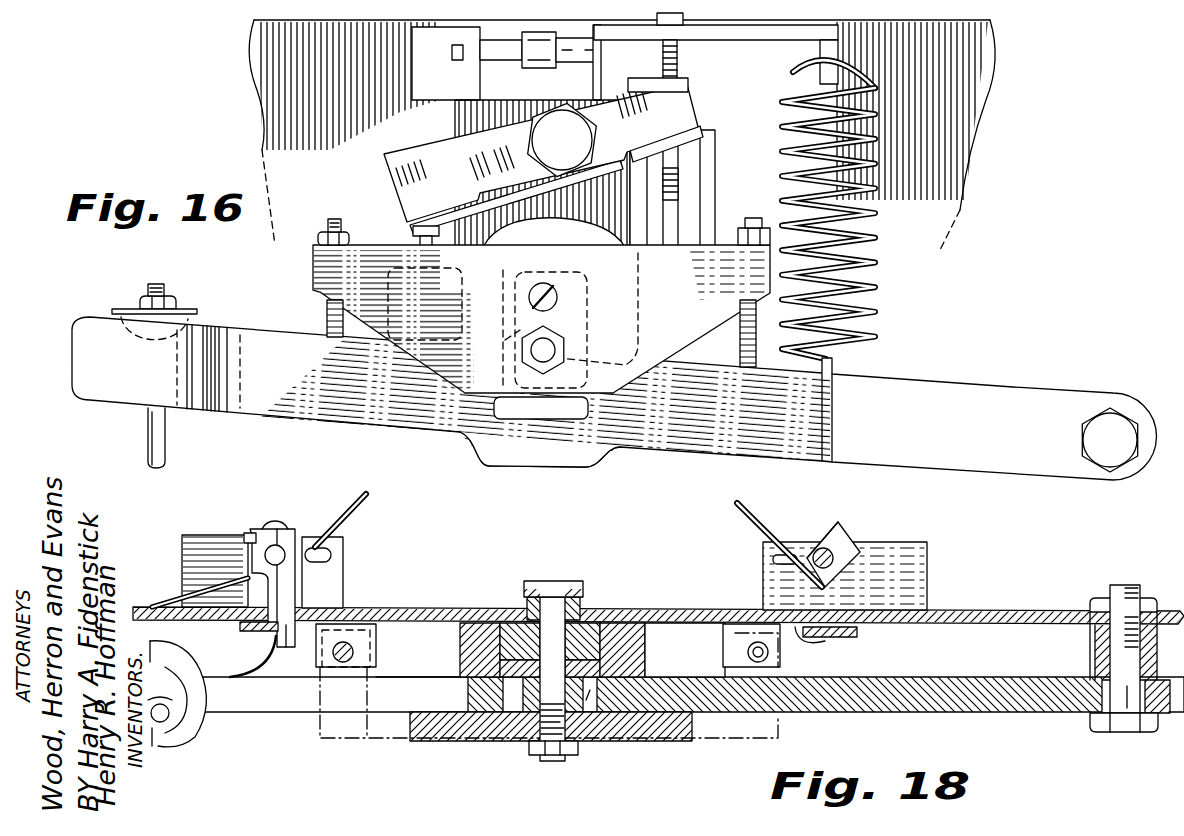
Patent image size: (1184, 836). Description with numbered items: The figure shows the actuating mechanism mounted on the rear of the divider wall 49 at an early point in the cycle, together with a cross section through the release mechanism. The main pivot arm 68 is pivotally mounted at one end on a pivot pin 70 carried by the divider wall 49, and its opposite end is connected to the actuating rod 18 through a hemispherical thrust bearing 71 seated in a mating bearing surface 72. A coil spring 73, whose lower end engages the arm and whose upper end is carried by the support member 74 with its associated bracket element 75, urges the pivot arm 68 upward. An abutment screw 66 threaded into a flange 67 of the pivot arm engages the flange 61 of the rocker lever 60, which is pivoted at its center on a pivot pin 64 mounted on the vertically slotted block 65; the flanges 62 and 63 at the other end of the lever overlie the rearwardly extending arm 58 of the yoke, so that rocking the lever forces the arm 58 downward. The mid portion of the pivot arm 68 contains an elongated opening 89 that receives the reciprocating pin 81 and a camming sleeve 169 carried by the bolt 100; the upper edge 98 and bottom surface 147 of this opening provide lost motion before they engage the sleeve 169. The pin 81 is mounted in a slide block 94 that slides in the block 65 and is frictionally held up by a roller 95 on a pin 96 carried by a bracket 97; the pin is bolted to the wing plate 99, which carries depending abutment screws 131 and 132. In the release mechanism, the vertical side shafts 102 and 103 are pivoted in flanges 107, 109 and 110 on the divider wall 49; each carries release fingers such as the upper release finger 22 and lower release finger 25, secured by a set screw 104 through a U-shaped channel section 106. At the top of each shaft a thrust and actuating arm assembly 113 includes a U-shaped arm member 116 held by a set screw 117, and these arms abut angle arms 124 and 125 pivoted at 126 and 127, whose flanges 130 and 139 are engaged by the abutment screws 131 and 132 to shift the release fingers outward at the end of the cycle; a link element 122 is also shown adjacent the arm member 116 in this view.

In FIG. 16, the actuating rod 18 is at (148, 457).
In FIG. 18, the actuating rod 18 is at (158, 722).
In FIG. 18, the upper release finger 22 is at (368, 499).
In FIG. 18, the lower release finger 25 is at (779, 538).
In FIG. 16, the divider wall 49 is at (975, 104).
In FIG. 18, the divider wall 49 is at (975, 616).
In FIG. 16, the rearwardly extending arm 58 is at (678, 181).
In FIG. 16, the rocker lever 60 is at (541, 153).
In FIG. 16, the flange 61 is at (457, 202).
In FIG. 16, the flange 62 is at (690, 88).
In FIG. 16, the flange 63 is at (704, 133).
In FIG. 16, the pivot pin 64 is at (562, 139).
In FIG. 16, the vertically slotted block 65 is at (628, 212).
In FIG. 18, the vertically slotted block 65 is at (642, 641).
In FIG. 16, the abutment screw 66 is at (413, 236).
In FIG. 16, the flange 67 is at (426, 280).
In FIG. 16, the main pivot arm 68 is at (258, 345).
In FIG. 18, the main pivot arm 68 is at (262, 702).
In FIG. 16, the pivot pin 70 is at (1114, 440).
In FIG. 18, the pivot pin 70 is at (1125, 653).
In FIG. 16, the hemispherical thrust bearing 71 is at (195, 314).
In FIG. 16, the bearing surface 72 is at (143, 345).
In FIG. 18, the bearing surface 72 is at (180, 712).
In FIG. 16, the coil spring 73 is at (878, 236).
In FIG. 16, the support member 74 is at (815, 58).
In FIG. 16, the bracket bolt 75 is at (678, 53).
In FIG. 16, the reciprocating pin 81 is at (550, 350).
In FIG. 18, the reciprocating pin 81 is at (553, 600).
In FIG. 16, the elongated opening 89 is at (568, 408).
In FIG. 18, the elongated opening 89 is at (513, 700).
In FIG. 16, the slide block 94 is at (590, 49).
In FIG. 18, the slide block 94 is at (596, 640).
In FIG. 16, the roller 95 is at (594, 72).
In FIG. 16, the pin 96 is at (452, 60).
In FIG. 16, the bracket 97 is at (420, 62).
In FIG. 16, the upper edge 98 is at (590, 293).
In FIG. 16, the wing plate 99 is at (541, 319).
In FIG. 18, the wing plate 99 is at (748, 738).
In FIG. 16, the bolt 100 is at (548, 290).
In FIG. 18, the vertical side shaft 102 is at (279, 552).
In FIG. 18, the vertical side shaft 103 is at (840, 579).
In FIG. 18, the set screw 104 is at (853, 536).
In FIG. 18, the U-shaped channel section 106 is at (830, 535).
In FIG. 18, the flange 107 is at (306, 576).
In FIG. 18, the flange 109 is at (333, 589).
In FIG. 18, the flange 110 is at (920, 594).
In FIG. 18, the thrust and actuating arm assembly 113 is at (250, 532).
In FIG. 18, the U-shaped arm member 116 is at (285, 640).
In FIG. 18, the set screw 117 is at (270, 521).
In FIG. 18, the link 122 is at (155, 604).
In FIG. 18, the angle arm 124 is at (255, 631).
In FIG. 18, the angle arm 125 is at (796, 635).
In FIG. 18, the pivot mounting 126 is at (830, 638).
In FIG. 18, the pivot mounting 127 is at (238, 673).
In FIG. 18, the flange 130 is at (725, 660).
In FIG. 16, the abutment screw 131 is at (332, 222).
In FIG. 18, the abutment screw 131 is at (343, 663).
In FIG. 16, the abutment screw 132 is at (740, 345).
In FIG. 18, the abutment screw 132 is at (758, 642).
In FIG. 18, the flange 139 is at (388, 650).
In FIG. 16, the bottom surface 147 is at (530, 420).
In FIG. 16, the camming sleeve 169 is at (505, 340).
In FIG. 18, the camming sleeve 169 is at (586, 700).